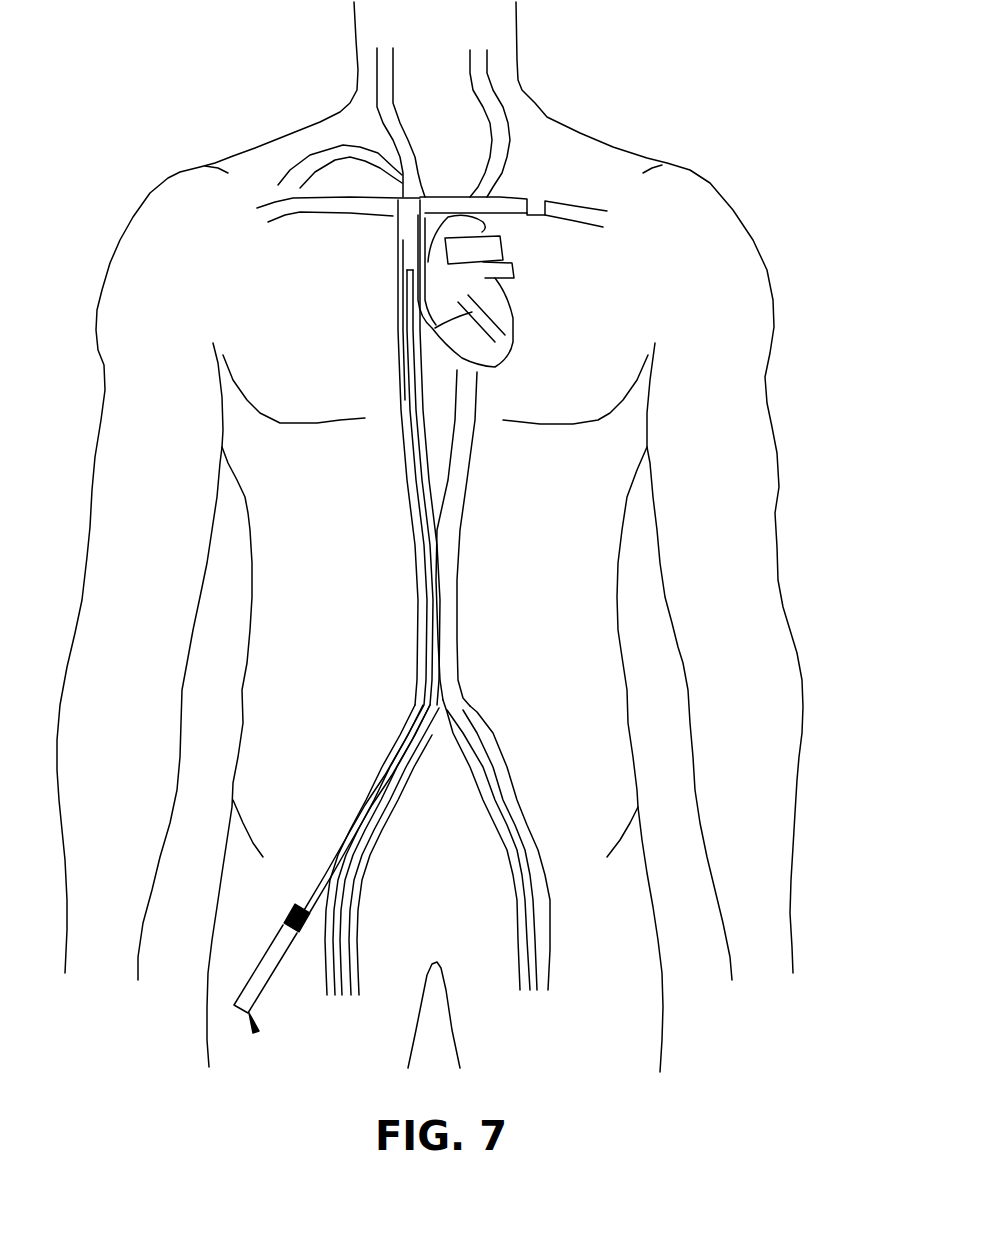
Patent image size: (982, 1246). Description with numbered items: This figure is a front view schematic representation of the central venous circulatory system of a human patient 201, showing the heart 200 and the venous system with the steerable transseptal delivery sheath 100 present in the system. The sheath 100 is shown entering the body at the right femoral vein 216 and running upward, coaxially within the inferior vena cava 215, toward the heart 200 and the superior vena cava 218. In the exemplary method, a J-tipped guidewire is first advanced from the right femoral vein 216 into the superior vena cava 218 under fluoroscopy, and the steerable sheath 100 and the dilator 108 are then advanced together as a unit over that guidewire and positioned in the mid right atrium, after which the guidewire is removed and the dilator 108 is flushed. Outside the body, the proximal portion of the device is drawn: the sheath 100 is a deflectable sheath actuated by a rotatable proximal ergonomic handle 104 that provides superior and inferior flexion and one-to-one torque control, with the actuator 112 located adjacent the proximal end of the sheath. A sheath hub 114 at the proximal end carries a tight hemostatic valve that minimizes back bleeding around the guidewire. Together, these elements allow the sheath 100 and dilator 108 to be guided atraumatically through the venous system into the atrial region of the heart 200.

The transseptal delivery sheath 100 is at (368, 591).
The rotatable proximal ergonomic handle 104 is at (293, 988).
The dilator 108 is at (345, 320).
The actuator 112 is at (292, 871).
The sheath hub 114 is at (256, 1059).
The heart 200 is at (516, 291).
The human patient 201 is at (560, 535).
The inferior vena cava 215 is at (385, 453).
The right femoral vein 216 is at (435, 846).
The superior vena cava 218 is at (432, 171).